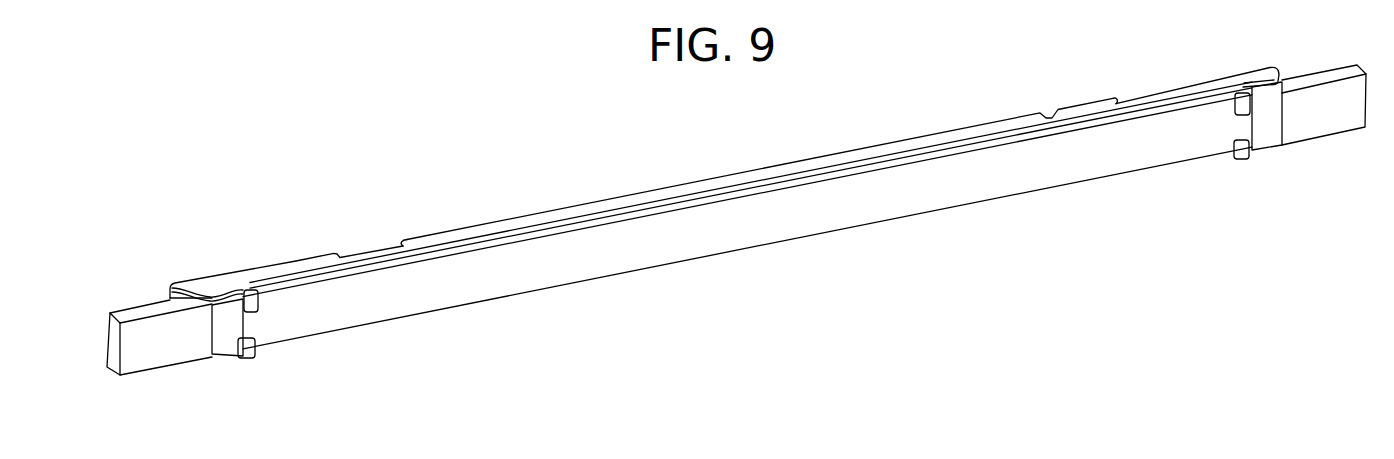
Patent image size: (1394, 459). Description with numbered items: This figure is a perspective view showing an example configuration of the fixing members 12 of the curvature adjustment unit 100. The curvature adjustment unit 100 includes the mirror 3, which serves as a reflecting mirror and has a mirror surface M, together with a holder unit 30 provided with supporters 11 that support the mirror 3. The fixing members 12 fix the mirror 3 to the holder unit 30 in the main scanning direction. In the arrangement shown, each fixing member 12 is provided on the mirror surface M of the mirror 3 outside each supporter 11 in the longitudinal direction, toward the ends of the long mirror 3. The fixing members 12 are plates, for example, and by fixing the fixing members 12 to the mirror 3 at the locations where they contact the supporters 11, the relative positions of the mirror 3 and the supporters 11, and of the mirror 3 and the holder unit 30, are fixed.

The curvature adjustment unit 100 is at (271, 136).
The mirror surface M is at (810, 222).
The holder unit 30 is at (536, 222).
The mirror 3 is at (112, 332).
The fixing member 12 is at (227, 343).
The supporter 11 is at (258, 304).